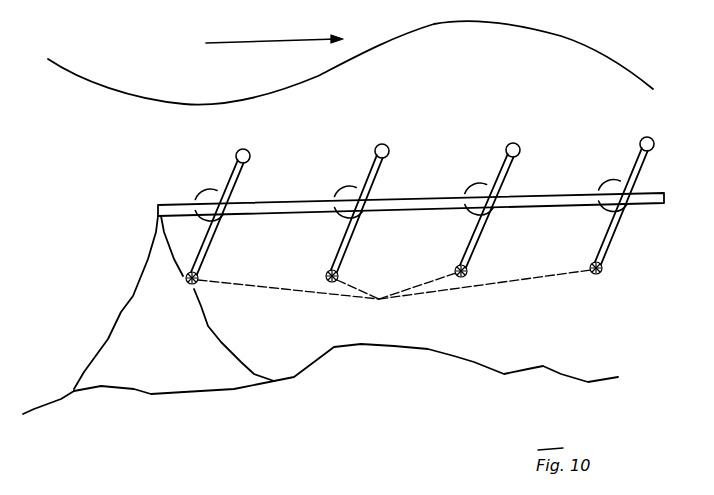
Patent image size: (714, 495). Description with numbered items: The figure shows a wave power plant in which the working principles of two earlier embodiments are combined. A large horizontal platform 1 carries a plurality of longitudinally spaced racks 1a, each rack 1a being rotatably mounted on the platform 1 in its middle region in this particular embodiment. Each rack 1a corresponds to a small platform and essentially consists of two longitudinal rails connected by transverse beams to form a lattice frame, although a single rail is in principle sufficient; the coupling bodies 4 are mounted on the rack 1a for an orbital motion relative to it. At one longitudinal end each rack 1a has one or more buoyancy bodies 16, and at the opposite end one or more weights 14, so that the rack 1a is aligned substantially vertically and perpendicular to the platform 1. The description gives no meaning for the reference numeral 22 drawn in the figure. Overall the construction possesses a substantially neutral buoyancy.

The platform 1 is at (156, 206).
The rack 1a is at (613, 243).
The coupling body 4 is at (600, 181).
The weight 14 is at (320, 368).
The buoyancy body 16 is at (640, 141).
The mound 22 is at (197, 313).